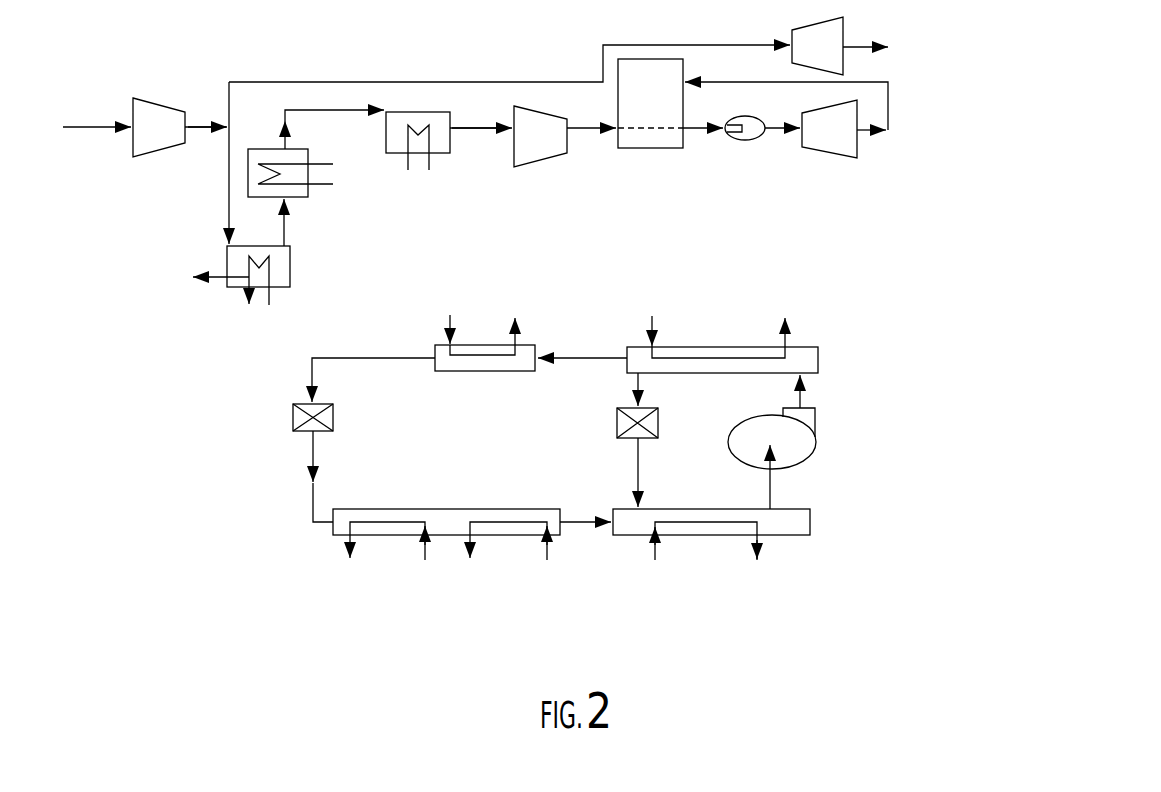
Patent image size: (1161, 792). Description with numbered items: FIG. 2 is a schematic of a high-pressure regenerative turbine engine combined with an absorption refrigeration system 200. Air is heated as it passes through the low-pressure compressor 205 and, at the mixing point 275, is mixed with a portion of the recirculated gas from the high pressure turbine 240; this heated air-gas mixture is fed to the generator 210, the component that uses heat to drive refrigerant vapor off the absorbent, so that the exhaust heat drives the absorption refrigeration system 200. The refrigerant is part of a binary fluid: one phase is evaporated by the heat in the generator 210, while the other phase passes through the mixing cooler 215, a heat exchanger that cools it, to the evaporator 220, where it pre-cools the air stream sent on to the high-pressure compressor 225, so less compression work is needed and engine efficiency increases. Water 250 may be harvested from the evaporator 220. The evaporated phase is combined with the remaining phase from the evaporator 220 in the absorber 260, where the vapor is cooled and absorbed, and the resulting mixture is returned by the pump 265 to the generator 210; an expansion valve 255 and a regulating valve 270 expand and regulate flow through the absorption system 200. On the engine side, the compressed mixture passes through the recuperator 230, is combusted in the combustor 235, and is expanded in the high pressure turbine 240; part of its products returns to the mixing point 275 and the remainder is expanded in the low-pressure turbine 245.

The absorption refrigeration system 200 is at (310, 455).
The low-pressure compressor 205 is at (160, 104).
The generator 210 is at (227, 265).
The mixing cooler 215 is at (304, 198).
The evaporator 220 is at (392, 154).
The high-pressure compressor 225 is at (550, 157).
The recuperator 230 is at (667, 149).
The combustor 235 is at (752, 141).
The high pressure turbine 240 is at (842, 158).
The low-pressure turbine 245 is at (847, 30).
The water 250 is at (450, 154).
The expansion valve 255 is at (293, 418).
The absorber 260 is at (805, 537).
The pump 265 is at (817, 448).
The regulating valve 270 is at (617, 422).
The mixing point 275 is at (227, 133).